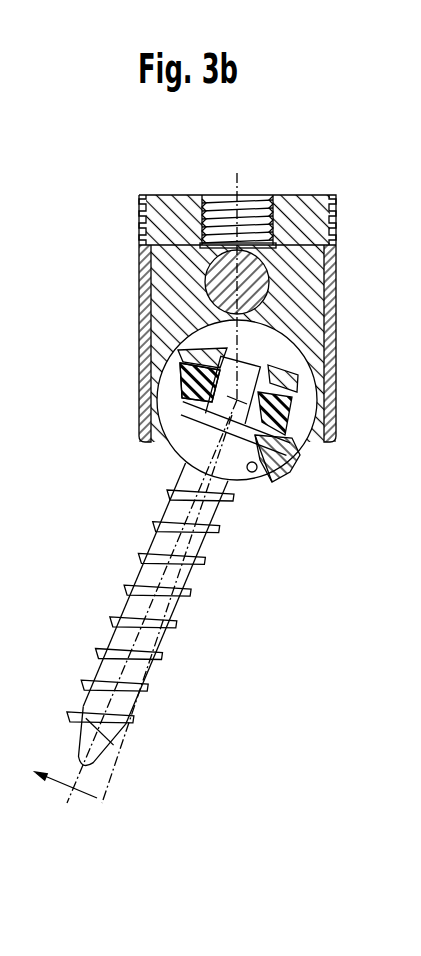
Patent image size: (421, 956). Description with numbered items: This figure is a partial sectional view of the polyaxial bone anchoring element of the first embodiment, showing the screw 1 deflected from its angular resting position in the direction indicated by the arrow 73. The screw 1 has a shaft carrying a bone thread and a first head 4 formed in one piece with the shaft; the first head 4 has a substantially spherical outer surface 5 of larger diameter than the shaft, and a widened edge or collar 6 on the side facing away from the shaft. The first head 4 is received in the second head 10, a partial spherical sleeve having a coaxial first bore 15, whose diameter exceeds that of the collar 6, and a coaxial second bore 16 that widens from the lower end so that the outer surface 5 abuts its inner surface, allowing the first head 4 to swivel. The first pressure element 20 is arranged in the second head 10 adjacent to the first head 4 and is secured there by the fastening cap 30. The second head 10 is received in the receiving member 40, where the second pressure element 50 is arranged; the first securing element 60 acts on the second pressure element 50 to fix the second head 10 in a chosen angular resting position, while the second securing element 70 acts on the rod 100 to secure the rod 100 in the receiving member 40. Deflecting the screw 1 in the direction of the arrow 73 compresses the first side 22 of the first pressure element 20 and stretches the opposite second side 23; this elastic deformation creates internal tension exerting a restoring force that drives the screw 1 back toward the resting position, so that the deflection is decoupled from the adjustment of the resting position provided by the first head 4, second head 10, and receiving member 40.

The screw 1 is at (185, 636).
The first head 4 is at (183, 462).
The spherical outer surface 5 is at (255, 472).
The collar 6 is at (177, 412).
The second head 10 is at (297, 460).
The first bore 15 is at (310, 450).
The second bore 16 is at (170, 447).
The first pressure element 20 is at (170, 378).
The first side 22 is at (183, 368).
The second side 23 is at (283, 408).
The fastening cap 30 is at (282, 365).
The receiving member 40 is at (337, 288).
The second pressure element 50 is at (163, 263).
The first securing element 60 is at (307, 197).
The second securing element 70 is at (252, 197).
The arrow 73 is at (87, 789).
The rod 100 is at (275, 266).